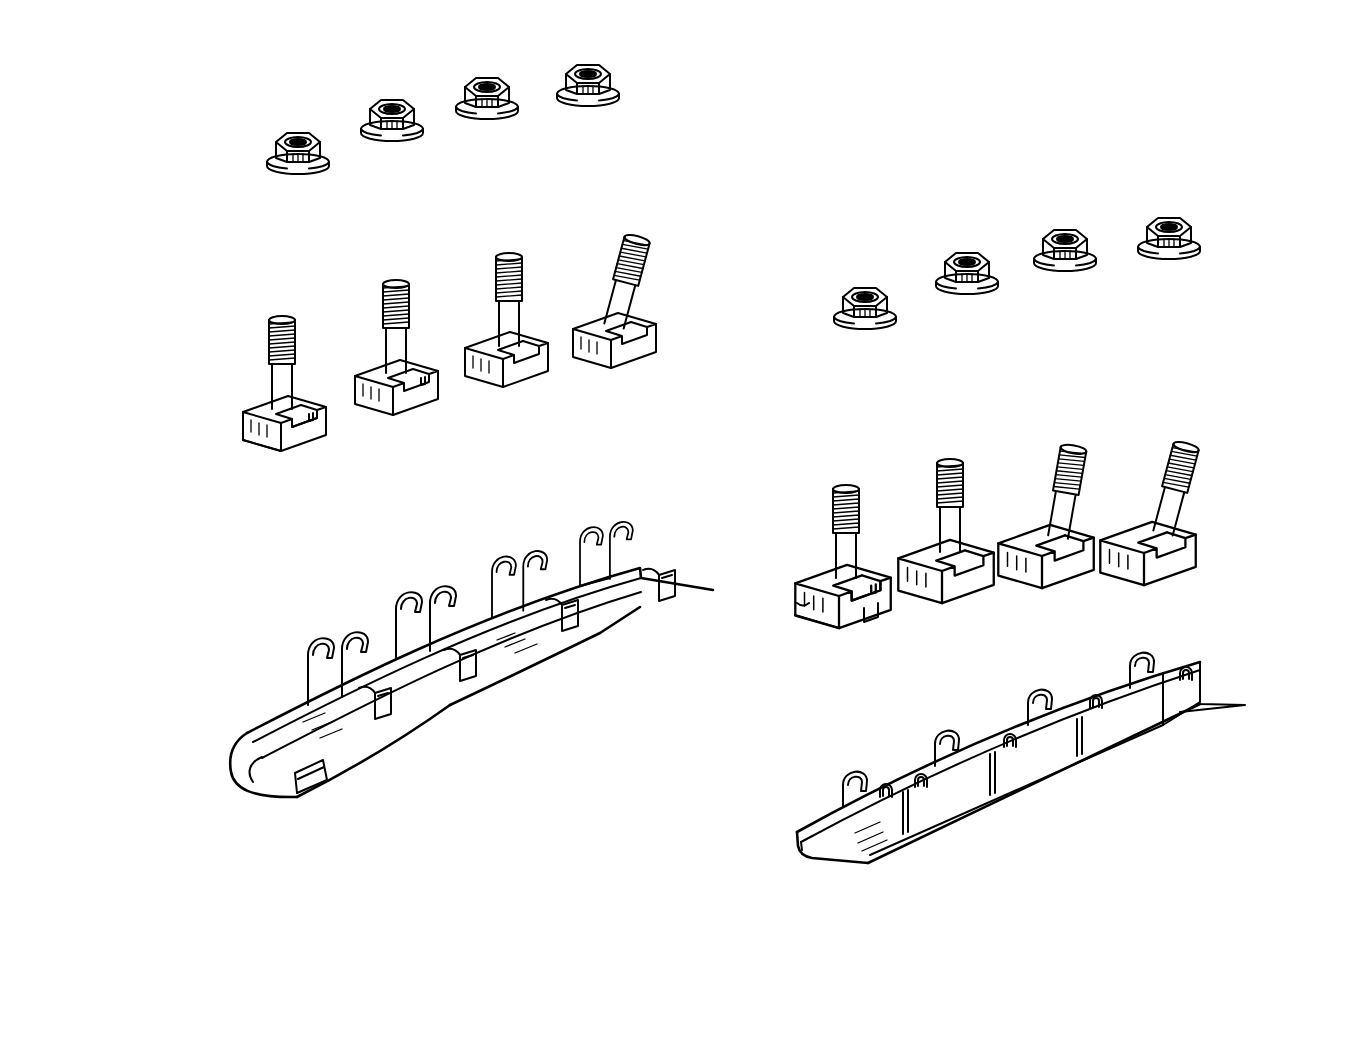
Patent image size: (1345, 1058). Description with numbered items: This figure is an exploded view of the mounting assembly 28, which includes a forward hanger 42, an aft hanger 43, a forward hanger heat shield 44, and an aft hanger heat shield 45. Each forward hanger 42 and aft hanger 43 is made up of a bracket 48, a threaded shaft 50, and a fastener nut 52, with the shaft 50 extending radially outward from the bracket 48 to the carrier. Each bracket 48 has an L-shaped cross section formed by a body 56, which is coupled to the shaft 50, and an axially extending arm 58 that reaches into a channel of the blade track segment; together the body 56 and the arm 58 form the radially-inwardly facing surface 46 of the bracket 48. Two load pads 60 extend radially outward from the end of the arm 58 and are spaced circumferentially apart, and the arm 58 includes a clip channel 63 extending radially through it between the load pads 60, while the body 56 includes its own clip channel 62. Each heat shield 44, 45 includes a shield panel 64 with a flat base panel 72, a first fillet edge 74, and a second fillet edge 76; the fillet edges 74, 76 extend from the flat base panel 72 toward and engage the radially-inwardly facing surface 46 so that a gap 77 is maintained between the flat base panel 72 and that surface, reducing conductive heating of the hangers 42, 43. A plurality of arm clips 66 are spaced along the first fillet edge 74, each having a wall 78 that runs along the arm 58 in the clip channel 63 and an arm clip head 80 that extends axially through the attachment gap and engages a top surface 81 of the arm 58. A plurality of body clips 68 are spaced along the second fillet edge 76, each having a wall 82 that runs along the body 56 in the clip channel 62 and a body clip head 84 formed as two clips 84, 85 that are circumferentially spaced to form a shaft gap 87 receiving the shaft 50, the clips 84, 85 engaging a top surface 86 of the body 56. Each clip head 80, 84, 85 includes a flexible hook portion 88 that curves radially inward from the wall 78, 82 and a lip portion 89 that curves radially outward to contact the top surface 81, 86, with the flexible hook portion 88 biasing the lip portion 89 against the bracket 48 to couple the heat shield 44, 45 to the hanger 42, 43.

The mounting assembly 28 is at (865, 128).
The forward hanger 42 is at (248, 332).
The aft hanger 43 is at (1255, 440).
The forward hanger heat shield 44 is at (215, 780).
The aft hanger heat shield 45 is at (983, 838).
The radially-inwardly facing surface 46 is at (263, 447).
The bracket 48 is at (212, 425).
The shaft 50 is at (305, 355).
The fastener nut 52 is at (314, 130).
The body 56 is at (237, 405).
The axially extending arm 58 is at (303, 453).
The load pads 60 is at (305, 408).
The clip channel 62 is at (870, 628).
The clip channel 63 is at (423, 400).
The shield panel 64 is at (268, 800).
The arm clip 66 is at (392, 727).
The body clip 68 is at (297, 663).
The flat base panel 72 is at (287, 743).
The first fillet edge 74 is at (430, 697).
The second fillet edge 76 is at (380, 657).
The gap 77 is at (847, 842).
The wall 78 is at (490, 663).
The arm clip head 80 is at (867, 787).
The top surface 81 is at (432, 382).
The wall 82 is at (477, 590).
The body clip head 84 is at (580, 550).
The clip 85 is at (640, 530).
The top surface 86 is at (417, 353).
The shaft gap 87 is at (602, 524).
The flexible hook portion 88 is at (503, 563).
The lip portion 89 is at (530, 558).